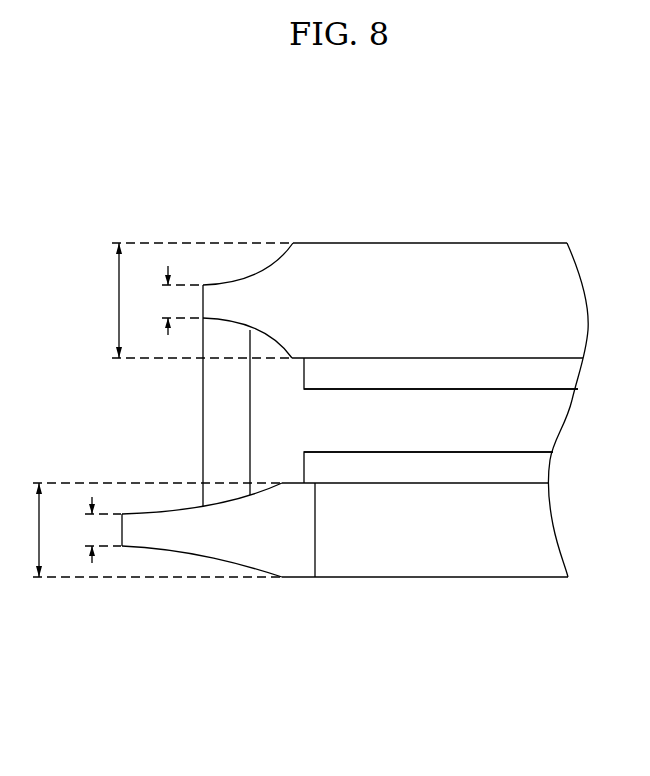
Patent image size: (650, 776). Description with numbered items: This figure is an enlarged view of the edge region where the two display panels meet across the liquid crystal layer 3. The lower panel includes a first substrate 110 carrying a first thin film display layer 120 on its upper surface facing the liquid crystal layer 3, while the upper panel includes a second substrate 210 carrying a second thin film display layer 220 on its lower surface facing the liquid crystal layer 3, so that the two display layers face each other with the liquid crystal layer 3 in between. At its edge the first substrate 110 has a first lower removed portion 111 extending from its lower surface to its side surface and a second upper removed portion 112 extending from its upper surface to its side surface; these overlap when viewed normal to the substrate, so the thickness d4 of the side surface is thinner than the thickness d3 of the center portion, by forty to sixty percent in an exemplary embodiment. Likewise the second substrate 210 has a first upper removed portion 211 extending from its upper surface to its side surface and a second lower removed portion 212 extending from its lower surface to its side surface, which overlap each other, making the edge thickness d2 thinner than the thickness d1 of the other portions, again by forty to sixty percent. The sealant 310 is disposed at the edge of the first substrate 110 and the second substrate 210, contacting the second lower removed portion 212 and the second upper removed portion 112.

The liquid crystal layer 3 is at (356, 432).
The first substrate 110 is at (416, 547).
The first lower removed portion 111 is at (180, 553).
The second upper removed portion 112 is at (157, 512).
The first thin film display layer 120 is at (480, 468).
The second substrate 210 is at (358, 265).
The first upper removed portion 211 is at (254, 272).
The second lower removed portion 212 is at (227, 322).
The second thin film display layer 220 is at (475, 370).
The sealant 310 is at (215, 432).
The thickness of the other portions of the second substrate d1 is at (191, 300).
The thickness of an edge of the second substrate d2 is at (171, 300).
The thickness of the center portion of the first substrate d3 is at (147, 530).
The thickness of a side surface of the first substrate d4 is at (93, 530).